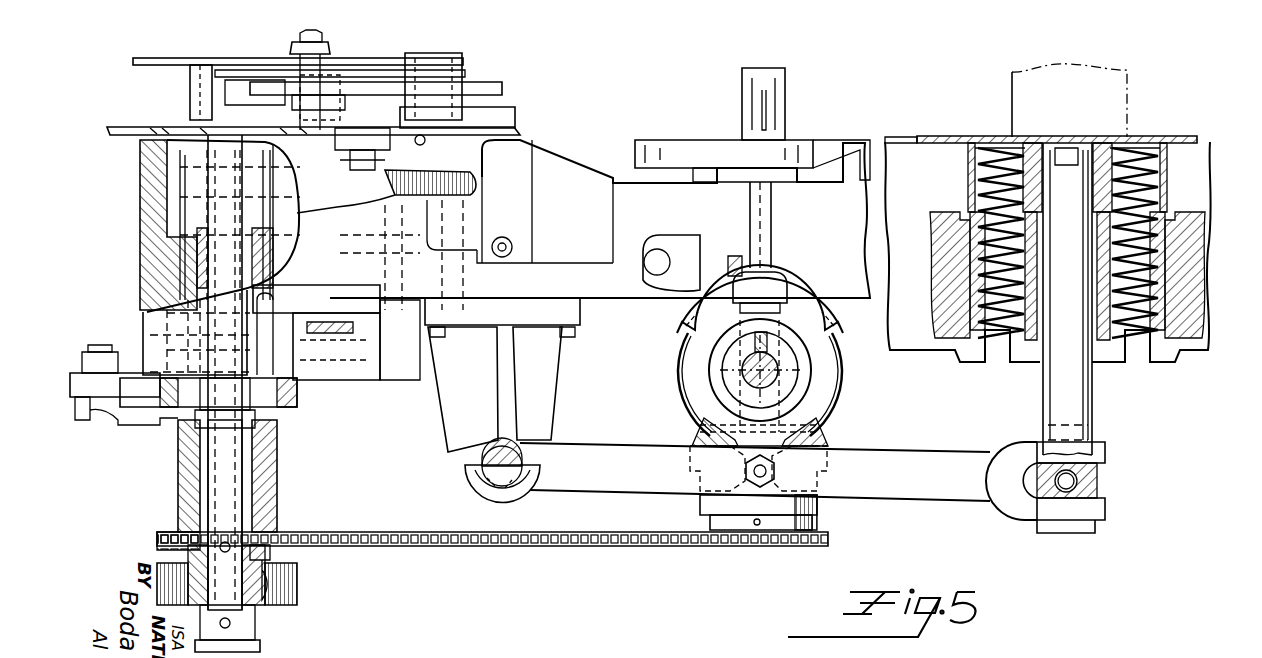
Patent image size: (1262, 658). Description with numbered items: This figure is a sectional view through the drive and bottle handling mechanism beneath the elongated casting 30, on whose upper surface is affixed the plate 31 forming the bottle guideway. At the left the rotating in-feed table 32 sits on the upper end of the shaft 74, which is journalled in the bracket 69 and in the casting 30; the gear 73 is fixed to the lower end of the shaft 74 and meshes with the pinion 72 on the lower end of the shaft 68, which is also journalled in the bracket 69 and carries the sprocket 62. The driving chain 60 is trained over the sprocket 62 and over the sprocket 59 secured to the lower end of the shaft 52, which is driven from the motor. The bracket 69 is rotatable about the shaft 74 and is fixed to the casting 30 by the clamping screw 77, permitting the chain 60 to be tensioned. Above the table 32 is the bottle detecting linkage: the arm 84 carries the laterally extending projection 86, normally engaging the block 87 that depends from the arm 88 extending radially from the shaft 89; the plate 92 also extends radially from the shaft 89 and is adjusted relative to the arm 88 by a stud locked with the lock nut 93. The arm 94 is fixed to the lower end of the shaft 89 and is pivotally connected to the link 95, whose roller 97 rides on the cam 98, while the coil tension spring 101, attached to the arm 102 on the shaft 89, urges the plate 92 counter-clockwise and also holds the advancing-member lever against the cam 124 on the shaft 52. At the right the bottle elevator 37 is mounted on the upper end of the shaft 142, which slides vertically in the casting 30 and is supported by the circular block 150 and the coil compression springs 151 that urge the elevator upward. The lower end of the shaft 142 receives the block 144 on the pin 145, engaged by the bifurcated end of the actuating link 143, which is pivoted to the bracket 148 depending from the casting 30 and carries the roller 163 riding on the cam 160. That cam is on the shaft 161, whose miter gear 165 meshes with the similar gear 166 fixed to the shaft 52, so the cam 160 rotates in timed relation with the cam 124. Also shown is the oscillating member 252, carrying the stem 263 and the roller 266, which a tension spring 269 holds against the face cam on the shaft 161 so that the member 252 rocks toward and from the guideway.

The elongated casting 30 is at (1205, 300).
The plate 31 is at (920, 137).
The in-feed table 32 is at (140, 127).
The bottle elevator 37 is at (1150, 135).
The shaft 52 is at (785, 100).
The sprocket 59 is at (815, 522).
The driving chain 60 is at (530, 546).
The sprocket 62 is at (278, 553).
The shaft 68 is at (227, 649).
The bracket 69 is at (277, 478).
The pinion 72 is at (297, 582).
The gear 73 is at (262, 600).
The shaft 74 is at (227, 530).
The clamping screw 77 is at (222, 428).
The arm 84 is at (488, 82).
The laterally extending projection 86 is at (318, 98).
The block 87 is at (239, 93).
The arm 88 is at (355, 70).
The shaft 89 is at (436, 45).
The plate 92 is at (222, 58).
The lock nut 93 is at (338, 38).
The arm 94 is at (370, 380).
The link 95 is at (297, 395).
The roller 97 is at (100, 420).
The cam 98 is at (130, 425).
The coil tension spring 101 is at (475, 178).
The arm 102 is at (372, 147).
The cam 124 is at (710, 128).
The shaft 142 is at (1085, 413).
The actuating link 143 is at (727, 470).
The block 144 is at (1097, 497).
The pin 145 is at (1080, 478).
The bracket 148 is at (502, 375).
The circular block 150 is at (1165, 195).
The coil compression springs 151 is at (975, 160).
The cam 160 is at (800, 405).
The shaft 161 is at (772, 374).
The roller 163 is at (782, 463).
The miter gear 165 is at (825, 358).
The miter gear 166 is at (830, 432).
The member 252 is at (670, 243).
The stem 263 is at (771, 265).
The roller 266 is at (760, 299).
The tension spring 269 is at (728, 268).